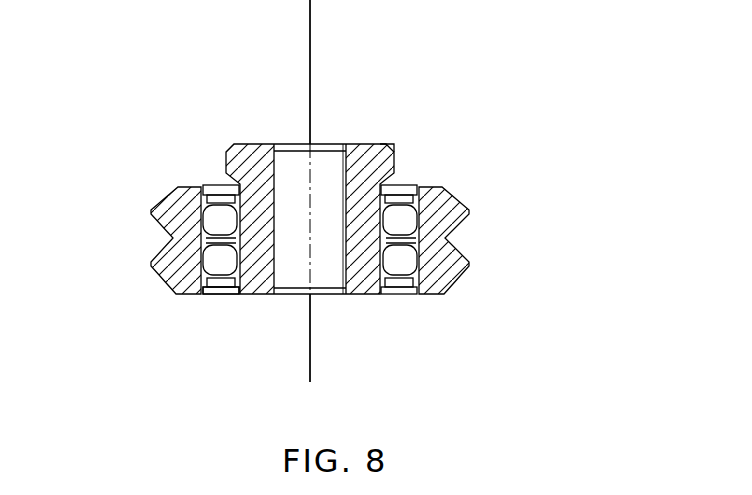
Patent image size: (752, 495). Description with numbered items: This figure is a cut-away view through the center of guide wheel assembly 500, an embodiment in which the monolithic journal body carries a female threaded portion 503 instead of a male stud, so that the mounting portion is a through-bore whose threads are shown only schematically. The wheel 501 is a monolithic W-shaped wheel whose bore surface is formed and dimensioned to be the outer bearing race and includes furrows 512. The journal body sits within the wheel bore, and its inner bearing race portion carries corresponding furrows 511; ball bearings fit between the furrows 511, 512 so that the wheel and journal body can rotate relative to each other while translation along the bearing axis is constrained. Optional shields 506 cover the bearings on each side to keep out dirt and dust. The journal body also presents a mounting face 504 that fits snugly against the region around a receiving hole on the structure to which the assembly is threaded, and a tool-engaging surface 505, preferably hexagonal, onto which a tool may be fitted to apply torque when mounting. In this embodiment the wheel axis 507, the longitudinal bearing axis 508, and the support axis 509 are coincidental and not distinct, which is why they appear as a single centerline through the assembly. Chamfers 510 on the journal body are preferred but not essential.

The guide wheel assembly 500 is at (612, 54).
The wheel 501 is at (167, 274).
The female threaded portion 503 is at (290, 178).
The mounting face 504 is at (241, 143).
The tool-engaging surface 505 is at (388, 139).
The shields 506 is at (212, 184).
The wheel axis 507 is at (332, 201).
The longitudinal bearing axis 508 is at (356, 201).
The support axis 509 is at (376, 201).
The chamfers 510 is at (343, 143).
The furrows on journal body 511 is at (260, 294).
The furrows on wheel bore surface 512 is at (175, 204).